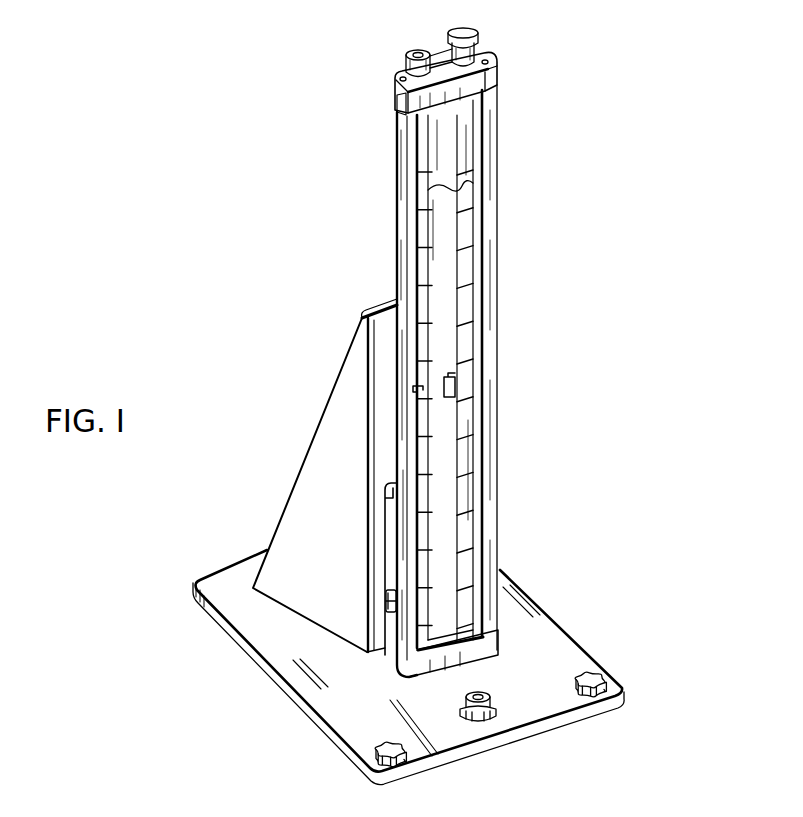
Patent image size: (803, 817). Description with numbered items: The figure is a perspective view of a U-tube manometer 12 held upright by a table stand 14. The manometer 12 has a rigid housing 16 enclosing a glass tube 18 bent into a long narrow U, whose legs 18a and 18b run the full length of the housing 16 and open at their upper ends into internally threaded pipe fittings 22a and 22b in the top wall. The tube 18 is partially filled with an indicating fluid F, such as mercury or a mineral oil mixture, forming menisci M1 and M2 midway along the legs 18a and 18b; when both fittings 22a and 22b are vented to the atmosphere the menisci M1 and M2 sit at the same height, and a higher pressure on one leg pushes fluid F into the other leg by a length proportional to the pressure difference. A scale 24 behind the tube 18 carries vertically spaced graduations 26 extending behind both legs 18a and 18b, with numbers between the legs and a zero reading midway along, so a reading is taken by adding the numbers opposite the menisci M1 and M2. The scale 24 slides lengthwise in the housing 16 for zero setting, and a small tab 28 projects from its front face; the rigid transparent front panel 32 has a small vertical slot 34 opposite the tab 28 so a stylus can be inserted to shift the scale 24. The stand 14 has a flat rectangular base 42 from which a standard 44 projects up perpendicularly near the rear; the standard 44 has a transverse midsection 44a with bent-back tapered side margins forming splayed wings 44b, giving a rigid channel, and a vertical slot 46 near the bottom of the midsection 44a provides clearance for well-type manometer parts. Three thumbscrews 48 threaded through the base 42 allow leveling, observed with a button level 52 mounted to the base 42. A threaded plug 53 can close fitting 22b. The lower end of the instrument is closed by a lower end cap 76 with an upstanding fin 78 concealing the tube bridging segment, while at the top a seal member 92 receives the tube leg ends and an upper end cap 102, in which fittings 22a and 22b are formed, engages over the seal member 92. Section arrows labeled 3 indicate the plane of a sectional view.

The manometer 12 is at (426, 350).
The stand 14 is at (232, 510).
The housing 16 is at (441, 350).
The glass tube 18 is at (446, 389).
The tube leg 18a is at (420, 232).
The tube leg 18b is at (465, 230).
The pipe fitting 22a is at (412, 52).
The pipe fitting 22b is at (494, 36).
The scale 24 is at (448, 137).
The graduations 26 is at (460, 282).
The tab 28 is at (363, 379).
The front panel 32 is at (441, 377).
The slot 34 is at (495, 401).
The base 42 is at (213, 582).
The standard 44 is at (314, 468).
The midsection 44a is at (364, 312).
The wings 44b is at (292, 500).
The vertical slot 46 is at (388, 498).
The thumbscrews 48 is at (386, 600).
The button level 52 is at (492, 703).
The threaded plug 53 is at (468, 38).
The lower end cap 76 is at (470, 657).
The fin 78 is at (488, 644).
The seal member 92 is at (399, 105).
The upper end cap 102 is at (497, 74).
The meniscus M1 is at (420, 381).
The meniscus M2 is at (458, 380).
The indicating fluid F is at (473, 418).
The section line for FIG. 3 is at (289, 430).